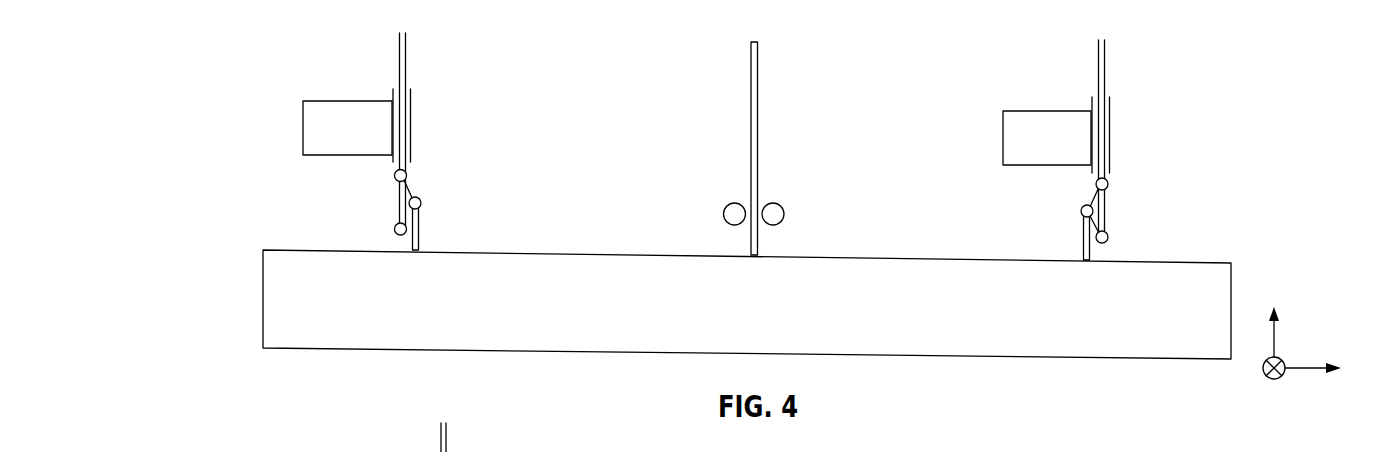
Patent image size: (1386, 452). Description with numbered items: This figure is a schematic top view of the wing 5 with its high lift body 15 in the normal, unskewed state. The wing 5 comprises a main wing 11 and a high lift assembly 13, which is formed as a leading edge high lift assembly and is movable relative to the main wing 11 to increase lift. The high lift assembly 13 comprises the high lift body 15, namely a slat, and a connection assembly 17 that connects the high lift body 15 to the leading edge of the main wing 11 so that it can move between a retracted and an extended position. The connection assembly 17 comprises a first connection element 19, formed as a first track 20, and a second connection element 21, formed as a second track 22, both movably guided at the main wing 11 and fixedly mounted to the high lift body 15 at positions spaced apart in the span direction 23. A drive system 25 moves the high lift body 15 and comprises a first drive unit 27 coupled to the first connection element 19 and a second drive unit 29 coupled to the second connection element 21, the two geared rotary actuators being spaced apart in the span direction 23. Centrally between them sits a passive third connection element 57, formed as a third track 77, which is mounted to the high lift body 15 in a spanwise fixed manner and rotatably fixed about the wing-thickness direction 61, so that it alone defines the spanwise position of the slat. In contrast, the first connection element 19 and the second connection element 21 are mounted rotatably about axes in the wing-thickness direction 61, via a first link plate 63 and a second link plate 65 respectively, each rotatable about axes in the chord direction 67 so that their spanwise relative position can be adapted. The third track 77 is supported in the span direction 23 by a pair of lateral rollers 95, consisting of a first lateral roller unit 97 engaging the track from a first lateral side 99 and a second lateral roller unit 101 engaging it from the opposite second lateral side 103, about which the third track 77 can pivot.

The wing 5 is at (185, 137).
The connection assembly 17 is at (185, 231).
The high lift assembly 13 is at (678, 304).
The high lift body 15 is at (862, 316).
The second lateral side 103 is at (294, 200).
The main wing 11 is at (871, 134).
The first lateral side 99 is at (1208, 162).
The second connection element 21 is at (449, 131).
The second track 22 is at (405, 58).
The first connection element 19 is at (1150, 138).
The first track 20 is at (1107, 78).
The drive system 25 is at (331, 101).
The second drive unit 29 is at (318, 113).
The first drive unit 27 is at (1020, 120).
The second link plate 65 is at (414, 188).
The first link plate 63 is at (1092, 195).
The third connection element 57 is at (806, 148).
The third track 77 is at (758, 70).
The pair of lateral rollers 95 is at (726, 170).
The second lateral roller unit 101 is at (735, 214).
The first lateral roller unit 97 is at (773, 213).
The wing-thickness direction 61 is at (1275, 380).
The chord direction 67 is at (1277, 339).
The span direction 23 is at (1313, 362).